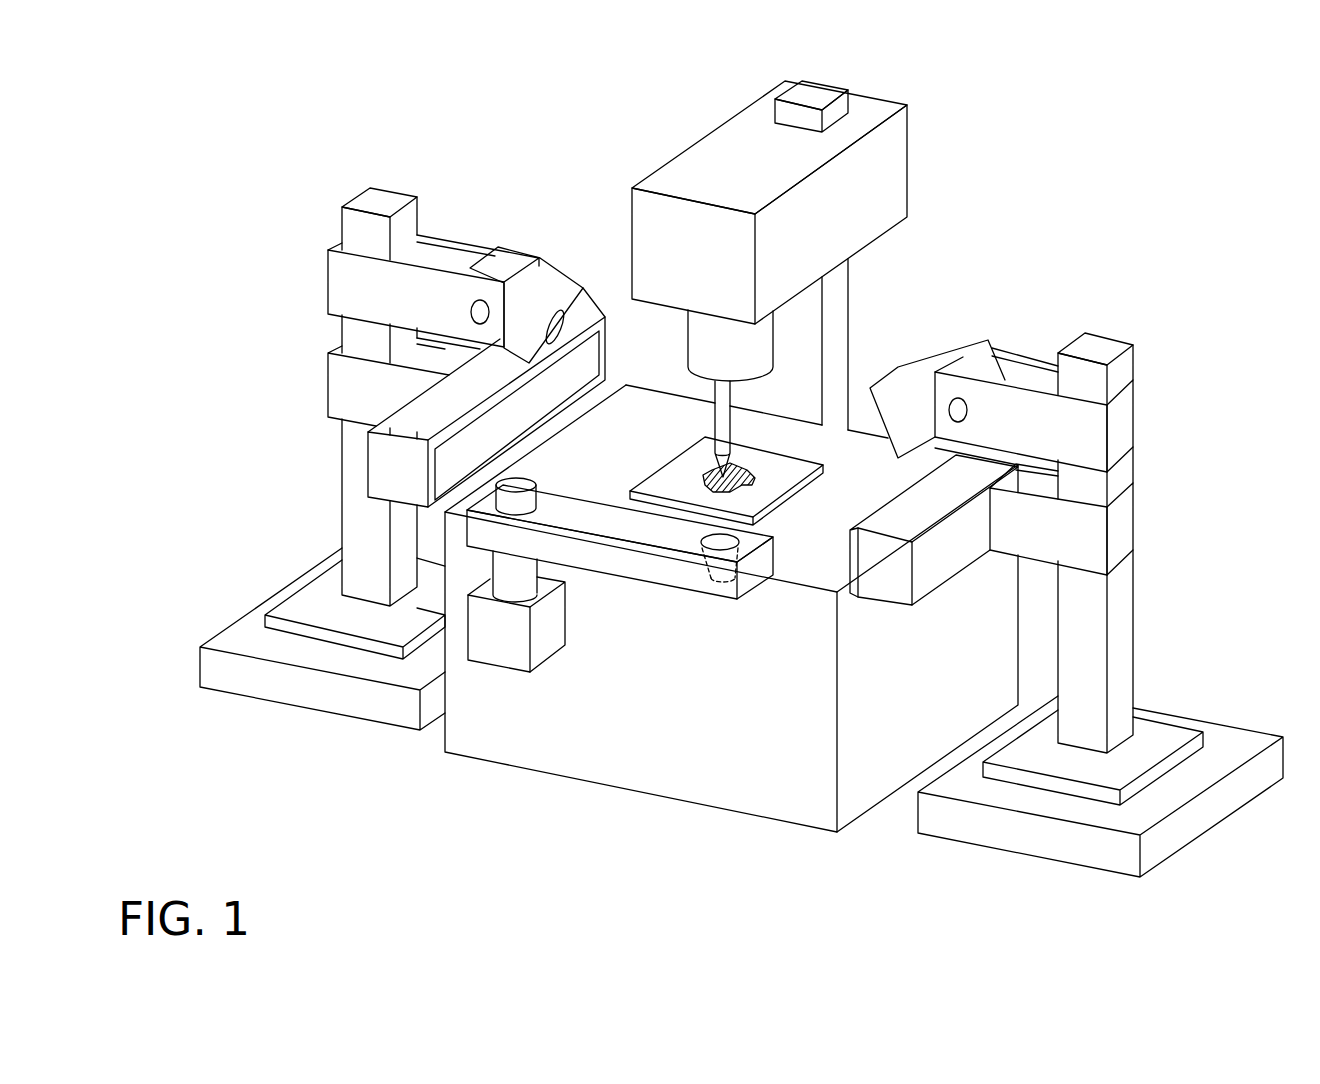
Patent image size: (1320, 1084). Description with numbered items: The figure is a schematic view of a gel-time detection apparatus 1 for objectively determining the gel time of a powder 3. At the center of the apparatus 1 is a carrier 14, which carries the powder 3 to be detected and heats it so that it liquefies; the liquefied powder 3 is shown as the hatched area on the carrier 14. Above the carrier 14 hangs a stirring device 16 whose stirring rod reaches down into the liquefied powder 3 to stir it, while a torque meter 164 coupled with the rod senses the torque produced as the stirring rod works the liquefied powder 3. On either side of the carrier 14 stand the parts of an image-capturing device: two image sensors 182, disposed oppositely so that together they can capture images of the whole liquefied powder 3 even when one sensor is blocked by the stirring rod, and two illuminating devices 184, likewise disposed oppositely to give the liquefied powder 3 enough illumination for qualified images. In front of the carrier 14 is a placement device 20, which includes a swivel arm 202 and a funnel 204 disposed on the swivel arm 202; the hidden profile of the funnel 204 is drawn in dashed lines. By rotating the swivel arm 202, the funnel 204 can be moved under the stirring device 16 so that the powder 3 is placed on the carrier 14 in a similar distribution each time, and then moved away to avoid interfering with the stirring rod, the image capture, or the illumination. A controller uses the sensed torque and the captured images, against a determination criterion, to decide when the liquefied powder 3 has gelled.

The gel-time detection apparatus 1 is at (1150, 122).
The powder 3 is at (708, 472).
The carrier 14 is at (757, 497).
The stirring device 16 is at (640, 326).
The torque meter 164 is at (728, 430).
The image sensor 182 is at (514, 264).
The illuminating device 184 is at (395, 467).
The placement device 20 is at (600, 850).
The swivel arm 202 is at (620, 568).
The funnel 204 is at (718, 547).